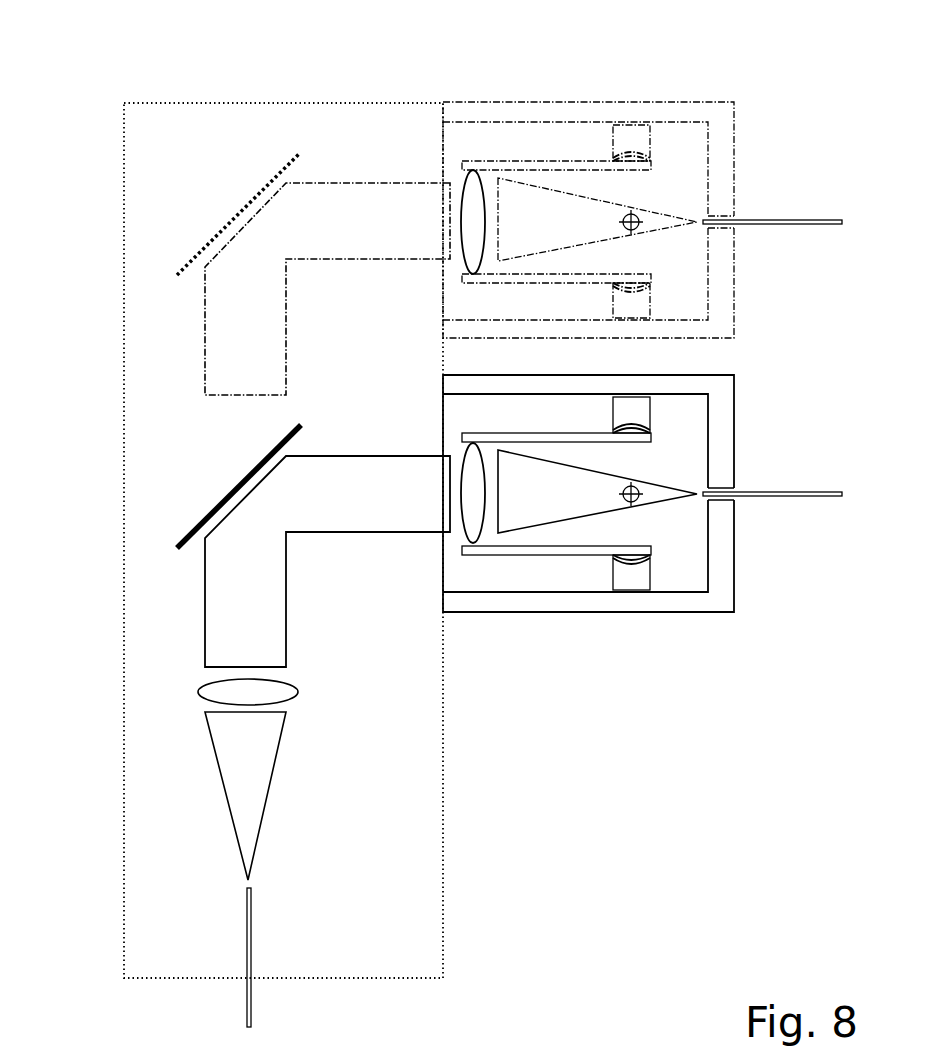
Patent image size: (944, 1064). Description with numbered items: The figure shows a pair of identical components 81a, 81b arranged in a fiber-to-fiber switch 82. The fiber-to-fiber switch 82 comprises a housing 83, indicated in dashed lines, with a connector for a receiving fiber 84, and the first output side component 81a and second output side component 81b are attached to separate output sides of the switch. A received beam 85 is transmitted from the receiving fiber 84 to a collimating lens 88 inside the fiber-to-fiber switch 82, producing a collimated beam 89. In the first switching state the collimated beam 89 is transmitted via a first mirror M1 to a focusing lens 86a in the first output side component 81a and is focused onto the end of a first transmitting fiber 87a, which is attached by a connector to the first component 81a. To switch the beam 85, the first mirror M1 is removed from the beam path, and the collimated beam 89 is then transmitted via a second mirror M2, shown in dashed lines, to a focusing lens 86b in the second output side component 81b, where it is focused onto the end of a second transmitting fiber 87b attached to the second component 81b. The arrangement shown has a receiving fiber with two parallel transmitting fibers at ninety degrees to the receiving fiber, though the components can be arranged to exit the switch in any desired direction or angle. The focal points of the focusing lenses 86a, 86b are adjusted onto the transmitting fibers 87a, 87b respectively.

The fiber-to-fiber switch 82 is at (352, 78).
The housing 83 is at (188, 103).
The collimated beam 89 is at (210, 354).
The second mirror M2 is at (220, 222).
The first mirror M1 is at (220, 499).
The second output side component 81b is at (709, 88).
The focusing lens 86b is at (482, 190).
The second transmitting fiber 87b is at (803, 220).
The first output side component 81a is at (738, 368).
The focusing lens 86a is at (477, 532).
The first transmitting fiber 87a is at (765, 493).
The collimating lens 88 is at (295, 692).
The received beam 85 is at (272, 780).
The receiving fiber 84 is at (250, 1008).